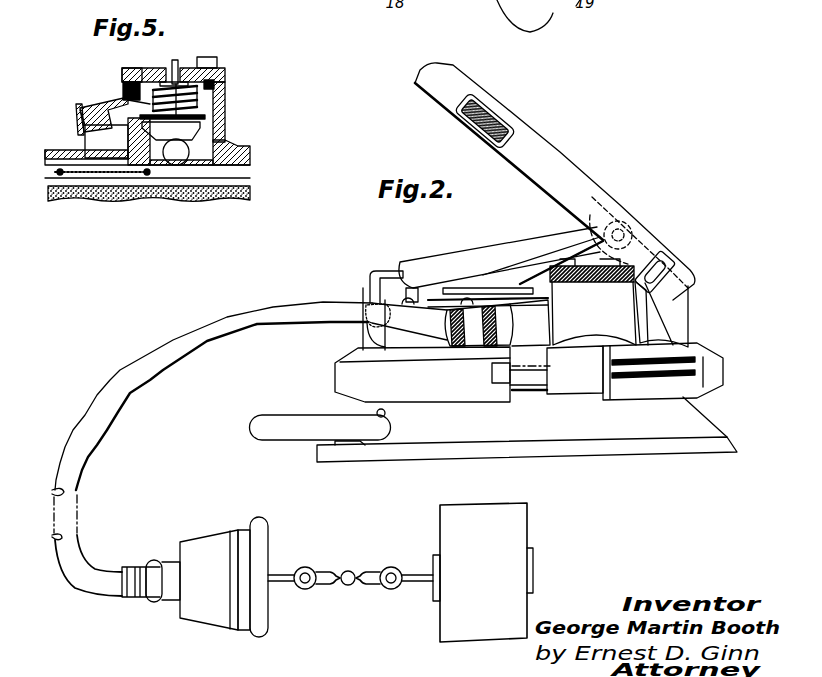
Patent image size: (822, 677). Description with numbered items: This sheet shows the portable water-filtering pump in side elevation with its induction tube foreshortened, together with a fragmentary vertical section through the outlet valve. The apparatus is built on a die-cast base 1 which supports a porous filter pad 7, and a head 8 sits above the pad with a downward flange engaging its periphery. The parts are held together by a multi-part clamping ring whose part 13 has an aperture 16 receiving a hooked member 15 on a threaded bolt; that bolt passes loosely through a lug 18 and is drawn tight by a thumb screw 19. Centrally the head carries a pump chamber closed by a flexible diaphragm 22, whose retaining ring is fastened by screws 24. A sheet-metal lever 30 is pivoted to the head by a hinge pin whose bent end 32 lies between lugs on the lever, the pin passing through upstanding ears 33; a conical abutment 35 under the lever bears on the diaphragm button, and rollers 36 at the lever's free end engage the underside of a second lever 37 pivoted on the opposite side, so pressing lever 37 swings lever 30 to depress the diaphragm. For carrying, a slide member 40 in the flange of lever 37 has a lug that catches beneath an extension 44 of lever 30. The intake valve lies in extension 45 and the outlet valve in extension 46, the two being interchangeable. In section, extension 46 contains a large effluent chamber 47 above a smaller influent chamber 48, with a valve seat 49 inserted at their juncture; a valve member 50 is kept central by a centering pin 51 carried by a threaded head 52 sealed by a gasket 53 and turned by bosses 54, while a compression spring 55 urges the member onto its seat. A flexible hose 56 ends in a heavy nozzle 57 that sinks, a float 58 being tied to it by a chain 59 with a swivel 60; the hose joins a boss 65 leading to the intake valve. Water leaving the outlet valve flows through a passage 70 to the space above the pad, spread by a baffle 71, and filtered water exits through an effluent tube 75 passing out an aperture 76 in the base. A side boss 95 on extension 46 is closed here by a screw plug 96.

In FIG. 2, the base 1 is at (705, 428).
In FIG. 5, the filter pad 7 is at (250, 190).
In FIG. 5, the head 8 is at (242, 152).
In FIG. 2, the head 8 is at (657, 334).
In FIG. 2, the clamping ring part 13 is at (348, 372).
In FIG. 2, the hooked member 15 is at (530, 383).
In FIG. 2, the aperture 16 is at (505, 385).
In FIG. 2, the lug 18 is at (583, 387).
In FIG. 2, the thumb screw 19 is at (683, 372).
In FIG. 2, the flexible diaphragm 22 is at (483, 300).
In FIG. 2, the screws 24 is at (412, 300).
In FIG. 2, the lever 30 is at (500, 247).
In FIG. 2, the bent end of hinge pin 32 is at (368, 300).
In FIG. 2, the upstanding ears 33 is at (368, 331).
In FIG. 2, the abutment portion 35 is at (538, 268).
In FIG. 2, the rollers 36 is at (620, 219).
In FIG. 2, the lever 37 is at (558, 160).
In FIG. 2, the slide member 40 is at (498, 120).
In FIG. 2, the extension 44 is at (382, 271).
In FIG. 2, the intake valve extension 45 is at (599, 302).
In FIG. 5, the outlet valve extension 46 is at (215, 102).
In FIG. 5, the effluent chamber 47 is at (216, 92).
In FIG. 5, the influent chamber 48 is at (190, 162).
In FIG. 5, the valve seat 49 is at (212, 121).
In FIG. 5, the valve member 50 is at (128, 102).
In FIG. 5, the centering pin 51 is at (182, 78).
In FIG. 5, the head 52 is at (128, 70).
In FIG. 5, the gasket 53 is at (218, 74).
In FIG. 5, the bosses 54 is at (212, 58).
In FIG. 5, the compression spring 55 is at (165, 80).
In FIG. 2, the flexible hose 56 is at (91, 443).
In FIG. 2, the nozzle means 57 is at (210, 533).
In FIG. 2, the float 58 is at (525, 520).
In FIG. 2, the chain means 59 is at (392, 567).
In FIG. 2, the swivel connection 60 is at (348, 570).
In FIG. 2, the boss 65 is at (520, 330).
In FIG. 5, the passage forming means 70 is at (102, 143).
In FIG. 5, the shield or baffle 71 is at (105, 180).
In FIG. 2, the effluent tube 75 is at (272, 441).
In FIG. 2, the aperture 76 is at (388, 416).
In FIG. 5, the boss 95 is at (105, 103).
In FIG. 5, the screw plug 96 is at (84, 110).